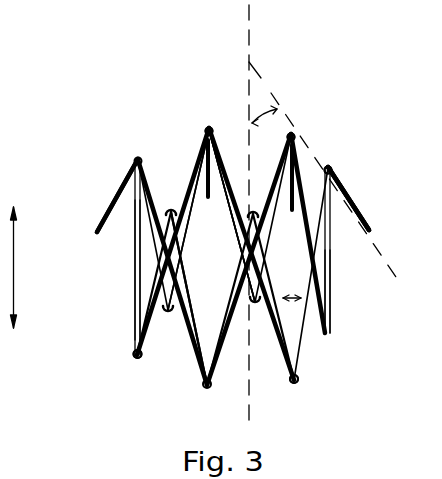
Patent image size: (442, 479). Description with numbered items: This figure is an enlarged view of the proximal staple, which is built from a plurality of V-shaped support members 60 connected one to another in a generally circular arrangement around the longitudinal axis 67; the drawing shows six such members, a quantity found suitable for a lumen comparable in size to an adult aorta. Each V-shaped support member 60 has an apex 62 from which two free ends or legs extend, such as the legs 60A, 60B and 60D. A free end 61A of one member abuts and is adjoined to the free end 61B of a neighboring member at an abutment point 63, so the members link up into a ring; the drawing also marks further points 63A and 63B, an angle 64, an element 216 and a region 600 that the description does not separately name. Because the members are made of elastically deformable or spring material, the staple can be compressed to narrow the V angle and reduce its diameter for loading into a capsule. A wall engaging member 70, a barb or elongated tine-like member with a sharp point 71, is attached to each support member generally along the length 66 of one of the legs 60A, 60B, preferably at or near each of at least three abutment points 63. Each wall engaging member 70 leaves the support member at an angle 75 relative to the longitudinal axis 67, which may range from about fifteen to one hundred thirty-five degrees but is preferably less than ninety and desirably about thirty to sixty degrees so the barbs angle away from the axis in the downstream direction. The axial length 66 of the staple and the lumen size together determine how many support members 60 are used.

The V-shaped support member 60 is at (147, 340).
The leg 60A is at (132, 310).
The leg 60B is at (155, 317).
The leg 60D is at (228, 272).
The free end 61A is at (199, 138).
The free end 61B is at (216, 143).
The apex 62 is at (133, 358).
The abutment point 63 is at (207, 125).
The secondary upper apex 63A is at (173, 205).
The secondary upper apex 63B is at (256, 208).
The angle between struts 64 is at (291, 297).
The length 66 is at (18, 262).
The longitudinal axis 67 is at (249, 9).
The wall engaging member 70 is at (345, 186).
The sharp point 71 is at (95, 230).
The angle 75 is at (325, 186).
The connector segment 216 is at (328, 290).
The cell opening 600 is at (196, 280).